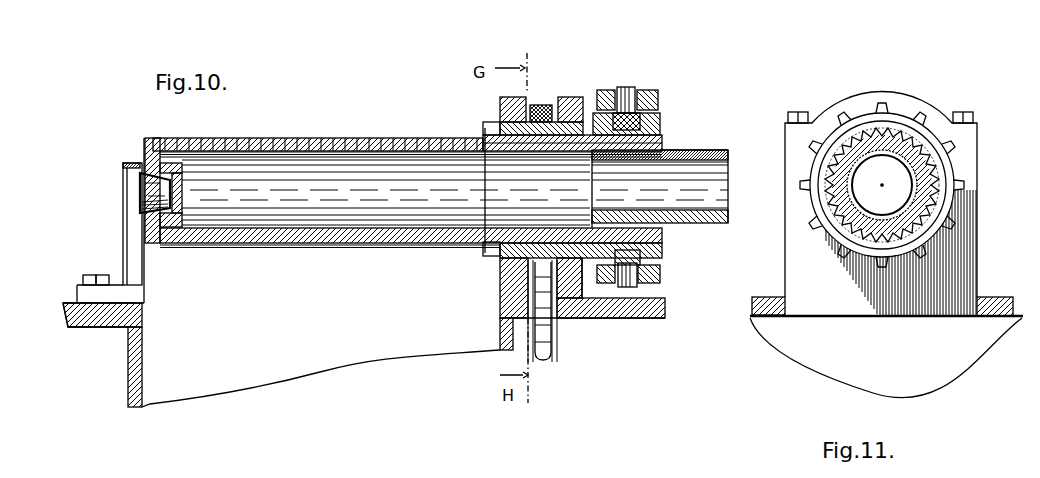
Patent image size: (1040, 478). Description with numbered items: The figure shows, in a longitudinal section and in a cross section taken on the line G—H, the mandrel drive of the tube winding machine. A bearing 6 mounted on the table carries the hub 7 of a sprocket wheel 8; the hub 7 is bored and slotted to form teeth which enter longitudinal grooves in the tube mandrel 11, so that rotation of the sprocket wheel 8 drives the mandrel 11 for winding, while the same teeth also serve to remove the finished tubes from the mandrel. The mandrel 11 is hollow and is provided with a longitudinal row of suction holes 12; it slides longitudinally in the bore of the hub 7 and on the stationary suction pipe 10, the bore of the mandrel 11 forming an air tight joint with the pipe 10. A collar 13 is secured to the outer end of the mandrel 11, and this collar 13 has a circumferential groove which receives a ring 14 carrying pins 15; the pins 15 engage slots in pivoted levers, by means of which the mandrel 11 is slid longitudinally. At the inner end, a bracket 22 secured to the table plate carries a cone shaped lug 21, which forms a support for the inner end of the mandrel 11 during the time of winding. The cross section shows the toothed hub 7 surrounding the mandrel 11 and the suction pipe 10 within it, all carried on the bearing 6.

In FIG. 10, the bearing 6 is at (508, 280).
In FIG. 11, the bearing 6 is at (886, 244).
In FIG. 10, the hub 7 is at (485, 128).
In FIG. 11, the hub 7 is at (848, 218).
In FIG. 10, the sprocket wheel 8 is at (540, 104).
In FIG. 10, the suction pipe 10 is at (700, 151).
In FIG. 11, the suction pipe 10 is at (908, 187).
In FIG. 10, the tube mandrel 11 is at (300, 238).
In FIG. 11, the tube mandrel 11 is at (830, 163).
In FIG. 10, the suction hole 12 is at (382, 135).
In FIG. 11, the suction hole 12 is at (883, 133).
In FIG. 10, the collar 13 is at (662, 120).
In FIG. 10, the ring 14 is at (640, 260).
In FIG. 10, the pin 15 is at (627, 88).
In FIG. 10, the cone shaped lug 21 is at (157, 198).
In FIG. 10, the bracket 22 is at (132, 195).